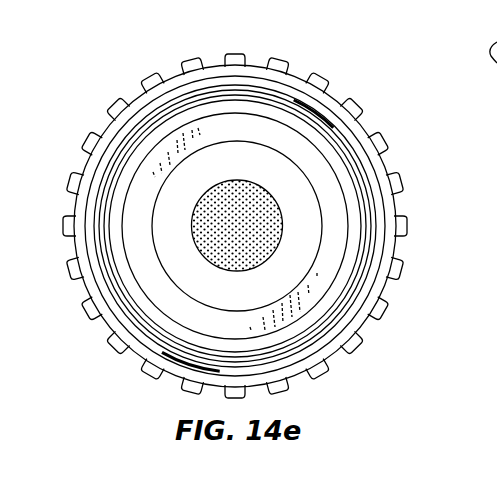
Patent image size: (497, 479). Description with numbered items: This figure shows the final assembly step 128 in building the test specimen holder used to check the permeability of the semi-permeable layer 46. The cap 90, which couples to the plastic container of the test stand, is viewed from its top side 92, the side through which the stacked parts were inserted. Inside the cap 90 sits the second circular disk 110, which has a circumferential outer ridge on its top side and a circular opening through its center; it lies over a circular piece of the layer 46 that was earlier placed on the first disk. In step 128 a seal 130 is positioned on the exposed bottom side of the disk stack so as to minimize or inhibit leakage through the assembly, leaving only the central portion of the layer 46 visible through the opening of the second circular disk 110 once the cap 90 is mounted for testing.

The step 128 is at (260, 206).
The cap 90 is at (243, 213).
The top side 92 is at (358, 130).
The layer 46 is at (253, 223).
The second circular disk 110 is at (306, 241).
The seal 130 is at (314, 294).